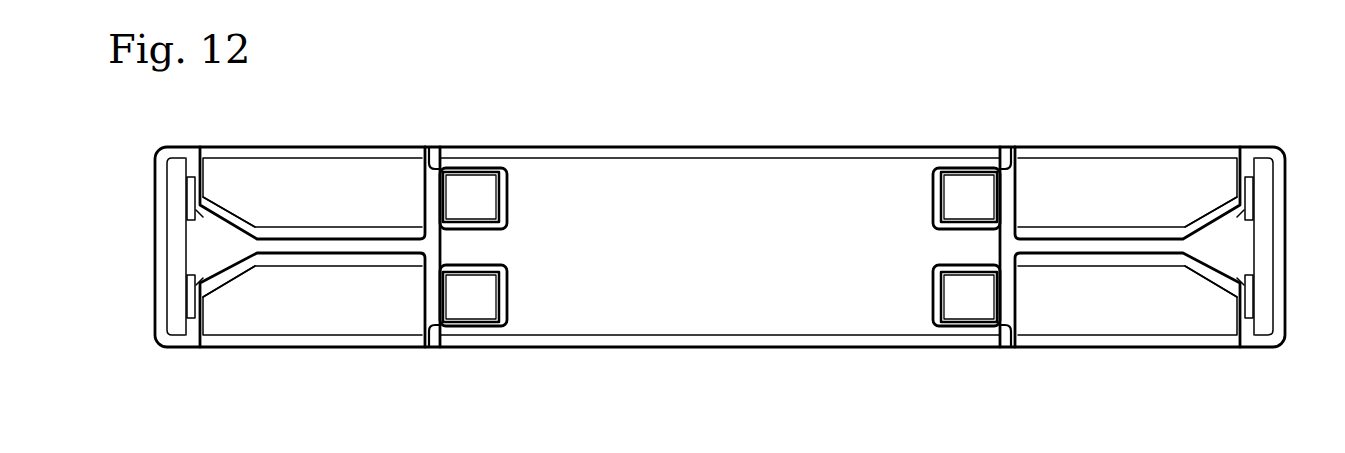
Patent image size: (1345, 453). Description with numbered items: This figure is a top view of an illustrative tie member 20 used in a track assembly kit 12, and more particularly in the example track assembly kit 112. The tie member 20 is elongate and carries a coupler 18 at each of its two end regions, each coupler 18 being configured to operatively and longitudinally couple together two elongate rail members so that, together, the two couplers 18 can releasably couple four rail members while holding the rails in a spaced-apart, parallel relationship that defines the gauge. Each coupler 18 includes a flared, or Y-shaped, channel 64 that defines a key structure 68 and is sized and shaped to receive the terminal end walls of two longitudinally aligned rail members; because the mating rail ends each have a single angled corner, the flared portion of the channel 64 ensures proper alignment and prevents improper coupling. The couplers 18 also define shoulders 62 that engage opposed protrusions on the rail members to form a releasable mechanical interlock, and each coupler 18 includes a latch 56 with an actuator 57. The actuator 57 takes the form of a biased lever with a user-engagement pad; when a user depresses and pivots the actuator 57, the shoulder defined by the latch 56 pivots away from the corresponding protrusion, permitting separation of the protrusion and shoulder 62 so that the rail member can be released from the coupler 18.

The track assembly kit 12 is at (1225, 56).
The tie member 20 is at (1097, 66).
The track assembly kit 112 is at (1157, 61).
The coupler 18 is at (314, 144).
The latch 56 is at (476, 172).
The actuator 57 is at (495, 171).
The shoulder 62 is at (203, 280).
The channel 64 is at (192, 162).
The key structure 68 is at (228, 210).